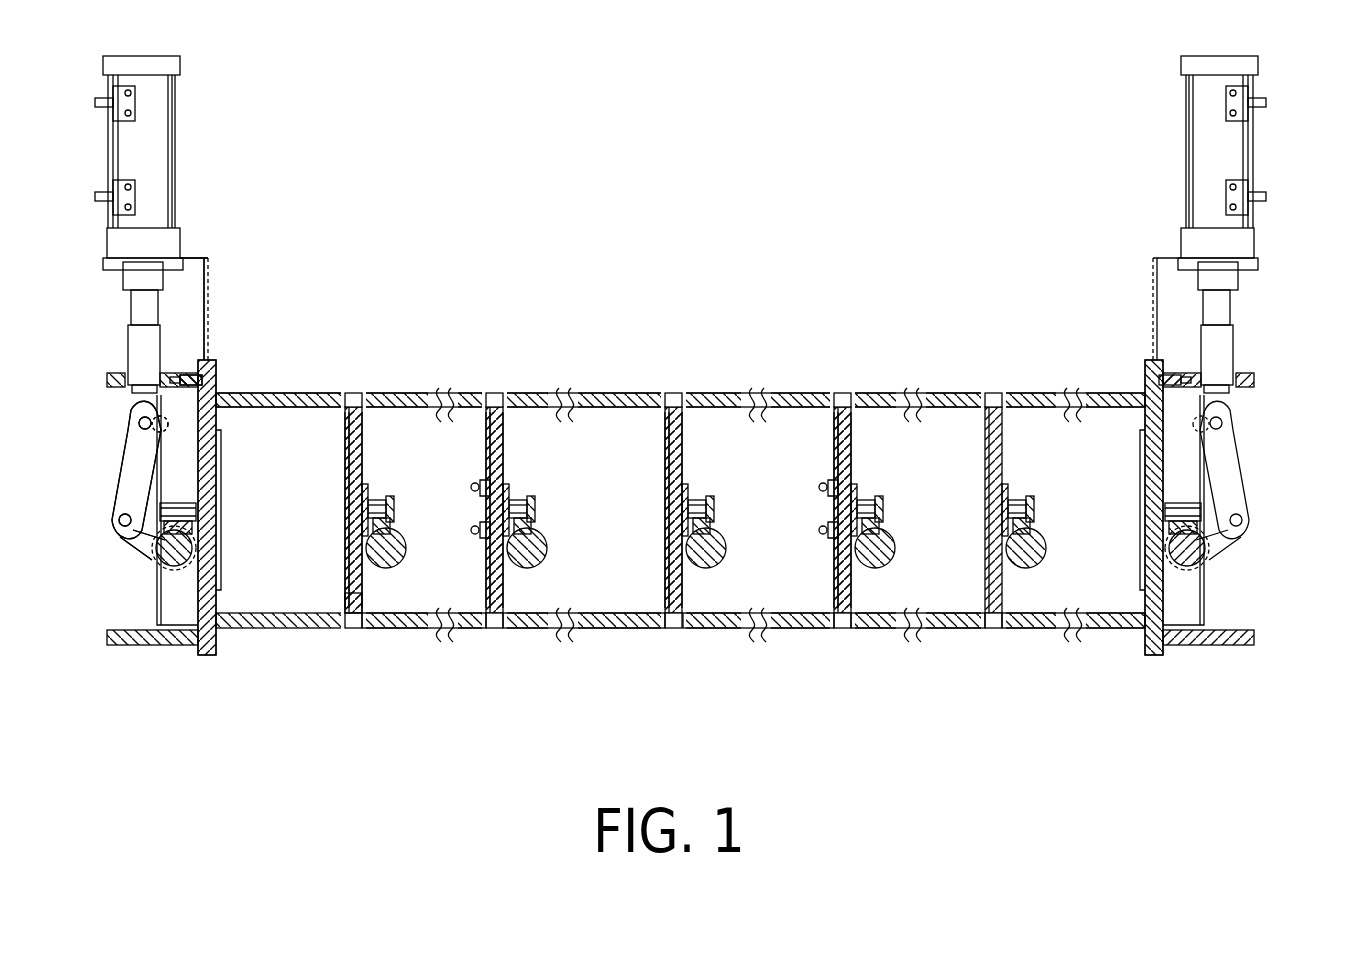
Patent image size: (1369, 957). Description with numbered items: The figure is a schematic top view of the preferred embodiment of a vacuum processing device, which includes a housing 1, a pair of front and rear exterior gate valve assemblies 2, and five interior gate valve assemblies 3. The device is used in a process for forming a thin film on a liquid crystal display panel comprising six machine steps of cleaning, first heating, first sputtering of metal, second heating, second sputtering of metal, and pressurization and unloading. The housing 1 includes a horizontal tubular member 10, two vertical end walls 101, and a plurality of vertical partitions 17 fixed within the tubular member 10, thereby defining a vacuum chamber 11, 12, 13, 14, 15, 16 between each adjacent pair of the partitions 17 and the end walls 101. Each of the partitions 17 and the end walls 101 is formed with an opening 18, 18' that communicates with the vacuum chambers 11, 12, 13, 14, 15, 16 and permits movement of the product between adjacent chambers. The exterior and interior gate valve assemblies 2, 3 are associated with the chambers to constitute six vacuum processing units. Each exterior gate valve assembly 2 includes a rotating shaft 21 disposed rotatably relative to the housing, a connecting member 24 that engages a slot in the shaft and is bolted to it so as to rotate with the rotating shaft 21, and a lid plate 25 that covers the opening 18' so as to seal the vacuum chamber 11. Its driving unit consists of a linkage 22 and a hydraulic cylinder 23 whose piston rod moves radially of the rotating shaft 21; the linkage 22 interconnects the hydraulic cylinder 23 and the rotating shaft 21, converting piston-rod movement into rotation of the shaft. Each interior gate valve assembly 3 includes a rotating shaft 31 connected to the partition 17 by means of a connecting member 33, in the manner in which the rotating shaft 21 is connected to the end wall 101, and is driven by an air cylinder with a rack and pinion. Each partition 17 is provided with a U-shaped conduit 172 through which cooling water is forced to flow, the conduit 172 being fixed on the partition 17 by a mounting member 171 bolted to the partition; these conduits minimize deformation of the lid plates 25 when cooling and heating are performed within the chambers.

The housing 1 is at (738, 386).
The exterior gate valve assembly 2 is at (92, 523).
The interior gate valve assembly 3 is at (388, 486).
The horizontal tubular member 10 is at (941, 392).
The vacuum chamber 11 is at (232, 600).
The vacuum chamber 12 is at (386, 605).
The vacuum chamber 13 is at (632, 593).
The vacuum chamber 14 is at (778, 596).
The vacuum chamber 15 is at (970, 600).
The vacuum chamber 16 is at (1032, 598).
The vertical partition 17 is at (357, 440).
The opening 18 is at (672, 470).
The opening 18' is at (680, 491).
The rotating shaft 21 is at (166, 580).
The linkage 22 is at (110, 453).
The hydraulic cylinder 23 is at (150, 158).
The connecting member 24 is at (152, 540).
The lid plate 25 is at (214, 392).
The rotating shaft 31 is at (354, 613).
The connecting member 33 is at (400, 563).
The vertical end wall 101 is at (212, 660).
The mounting member 171 is at (480, 540).
The U-shaped conduit 172 is at (476, 500).